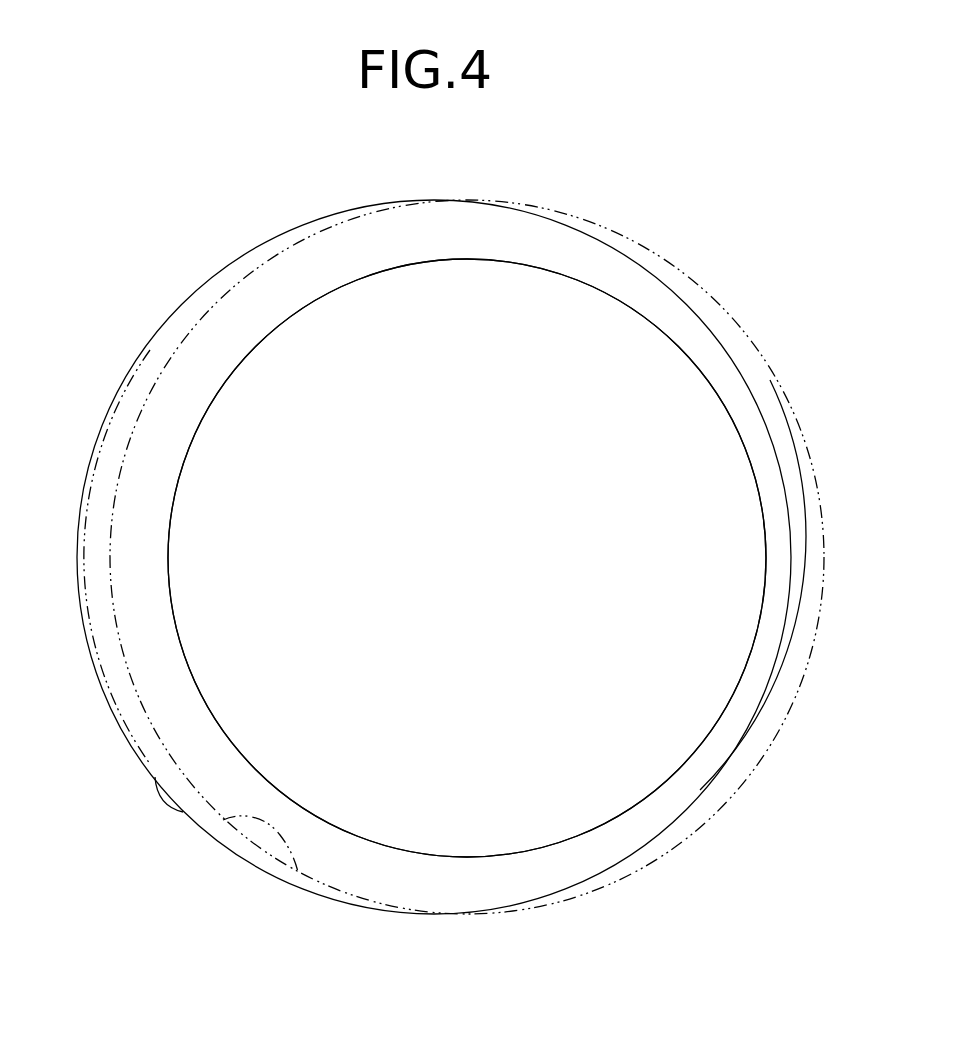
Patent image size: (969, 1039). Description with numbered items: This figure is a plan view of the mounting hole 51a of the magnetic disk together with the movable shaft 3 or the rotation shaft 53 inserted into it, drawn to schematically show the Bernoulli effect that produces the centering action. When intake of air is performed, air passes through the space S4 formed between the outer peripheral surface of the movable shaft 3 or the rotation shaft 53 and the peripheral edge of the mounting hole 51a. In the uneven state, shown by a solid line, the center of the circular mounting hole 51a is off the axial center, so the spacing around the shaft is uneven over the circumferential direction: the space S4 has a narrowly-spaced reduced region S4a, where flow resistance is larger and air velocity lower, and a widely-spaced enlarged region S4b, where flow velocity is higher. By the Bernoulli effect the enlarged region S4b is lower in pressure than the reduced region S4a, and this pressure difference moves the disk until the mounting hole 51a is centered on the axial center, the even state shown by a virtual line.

The movable shaft 3 is at (306, 308).
The rotation shaft 53 is at (467, 558).
The space S4 is at (457, 880).
The reduced region S4a is at (775, 580).
The enlarged region S4b is at (150, 505).
The mounting hole 51a is at (183, 812).